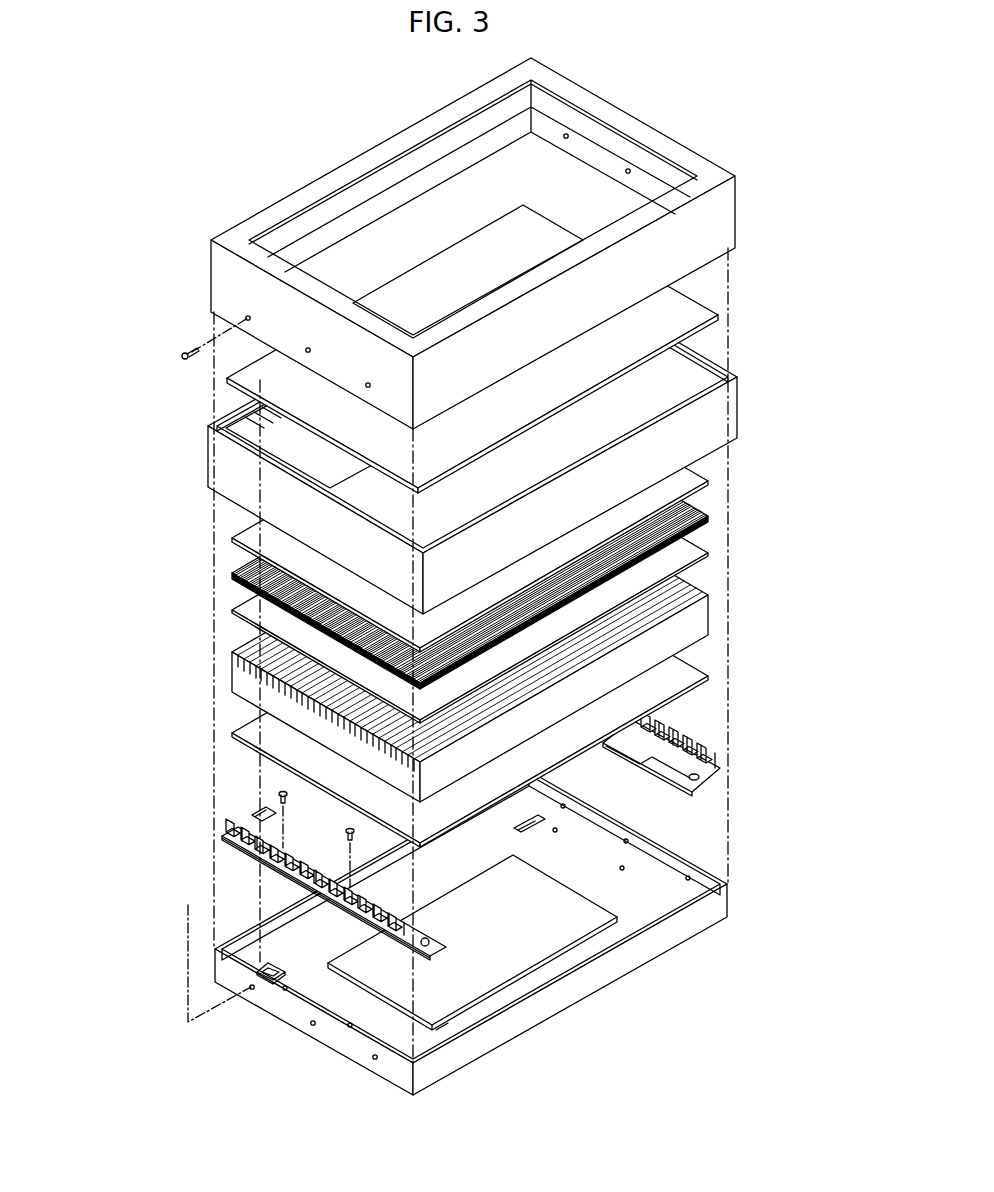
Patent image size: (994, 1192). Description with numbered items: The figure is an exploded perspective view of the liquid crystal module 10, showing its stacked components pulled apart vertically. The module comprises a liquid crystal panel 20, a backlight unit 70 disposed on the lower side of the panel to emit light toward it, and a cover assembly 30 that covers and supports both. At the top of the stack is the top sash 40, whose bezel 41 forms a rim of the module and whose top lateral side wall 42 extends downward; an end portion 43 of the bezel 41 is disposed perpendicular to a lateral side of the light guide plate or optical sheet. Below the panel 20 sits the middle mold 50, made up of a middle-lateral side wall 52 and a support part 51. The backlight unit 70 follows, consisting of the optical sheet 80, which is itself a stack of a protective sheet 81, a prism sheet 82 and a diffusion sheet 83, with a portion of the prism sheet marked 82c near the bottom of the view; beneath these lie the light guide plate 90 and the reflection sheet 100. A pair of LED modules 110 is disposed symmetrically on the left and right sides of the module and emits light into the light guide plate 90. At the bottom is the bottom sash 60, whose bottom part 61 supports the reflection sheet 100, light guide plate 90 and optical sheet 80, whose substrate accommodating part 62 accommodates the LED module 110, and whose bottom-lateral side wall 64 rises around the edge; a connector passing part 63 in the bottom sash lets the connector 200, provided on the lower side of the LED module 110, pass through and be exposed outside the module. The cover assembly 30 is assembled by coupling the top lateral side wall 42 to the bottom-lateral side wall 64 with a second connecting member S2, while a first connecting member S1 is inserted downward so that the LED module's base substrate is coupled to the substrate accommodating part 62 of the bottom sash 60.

The liquid crystal module 10 is at (349, 88).
The cover assembly 30 is at (85, 243).
The liquid crystal panel 20 is at (720, 312).
The top sash 40 is at (145, 192).
The bezel 41 is at (215, 240).
The top lateral side wall 42 is at (215, 278).
The end portion 43 is at (282, 258).
The middle mold 50 is at (145, 430).
The support part 51 is at (232, 440).
The middle-lateral side wall 52 is at (223, 481).
The bottom sash 60 is at (147, 980).
The bottom part 61 is at (390, 988).
The substrate accommodating part 62 is at (340, 998).
The connector passing part 63 is at (257, 973).
The bottom-lateral side wall 64 is at (270, 1003).
The backlight unit 70 is at (813, 518).
The optical sheet 80 is at (773, 480).
The protective sheet 81 is at (710, 481).
The prism sheet 82 is at (710, 517).
The prism sheet tab 82c is at (442, 1030).
The diffusion sheet 83 is at (710, 554).
The light guide plate 90 is at (711, 620).
The reflection sheet 100 is at (712, 685).
The LED module 110 is at (232, 852).
The connector 200 is at (262, 808).
The first connecting member S1 is at (280, 797).
The second connecting member S2 is at (190, 358).